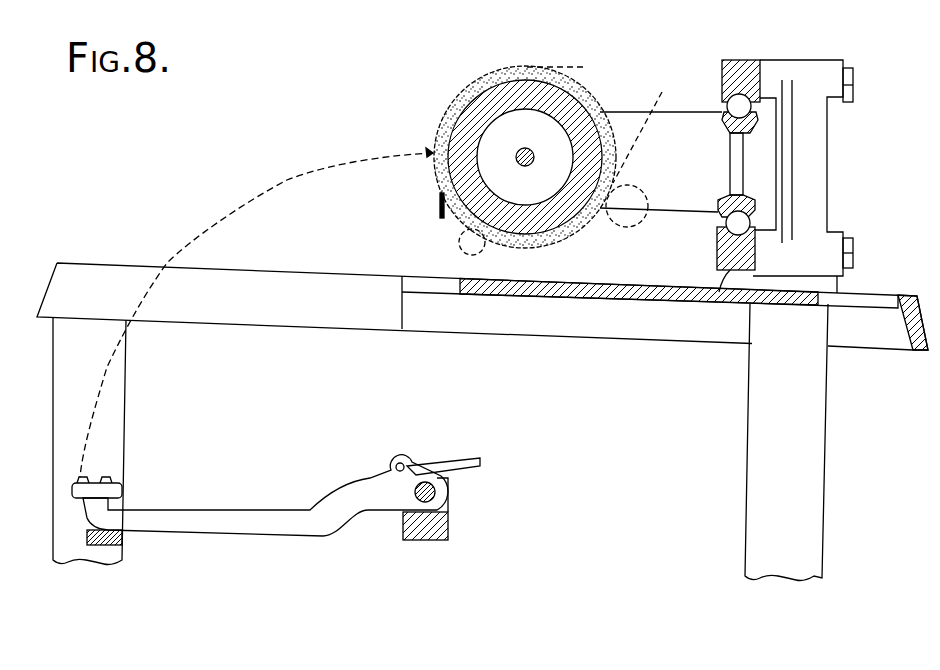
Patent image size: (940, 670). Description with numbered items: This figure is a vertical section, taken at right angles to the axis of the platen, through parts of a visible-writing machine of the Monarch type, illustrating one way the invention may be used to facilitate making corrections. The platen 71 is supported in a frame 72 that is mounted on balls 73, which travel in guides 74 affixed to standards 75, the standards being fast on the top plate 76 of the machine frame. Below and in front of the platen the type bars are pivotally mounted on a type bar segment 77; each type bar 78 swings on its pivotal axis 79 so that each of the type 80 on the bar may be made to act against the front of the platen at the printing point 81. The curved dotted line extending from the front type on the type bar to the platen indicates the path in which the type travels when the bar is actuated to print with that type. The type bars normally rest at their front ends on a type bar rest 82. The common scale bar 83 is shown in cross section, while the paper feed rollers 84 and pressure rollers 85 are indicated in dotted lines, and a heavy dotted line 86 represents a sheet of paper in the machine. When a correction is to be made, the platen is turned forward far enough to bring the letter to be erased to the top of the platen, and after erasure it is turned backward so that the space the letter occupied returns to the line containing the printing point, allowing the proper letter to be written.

The platen 71 is at (590, 106).
The frame 72 is at (676, 117).
The balls 73 is at (723, 128).
The guides 74 is at (750, 60).
The standards 75 is at (803, 176).
The top plate 76 is at (316, 277).
The type bar segment 77 is at (448, 522).
The type bar 78 is at (283, 512).
The pivotal axis 79 is at (428, 483).
The type 80 is at (108, 477).
The printing point 81 is at (256, 303).
The type bar rest 82 is at (124, 541).
The scale bar 83 is at (440, 210).
The paper feed rollers 84 is at (627, 227).
The pressure rollers 85 is at (459, 245).
The sheet of paper 86 is at (580, 66).